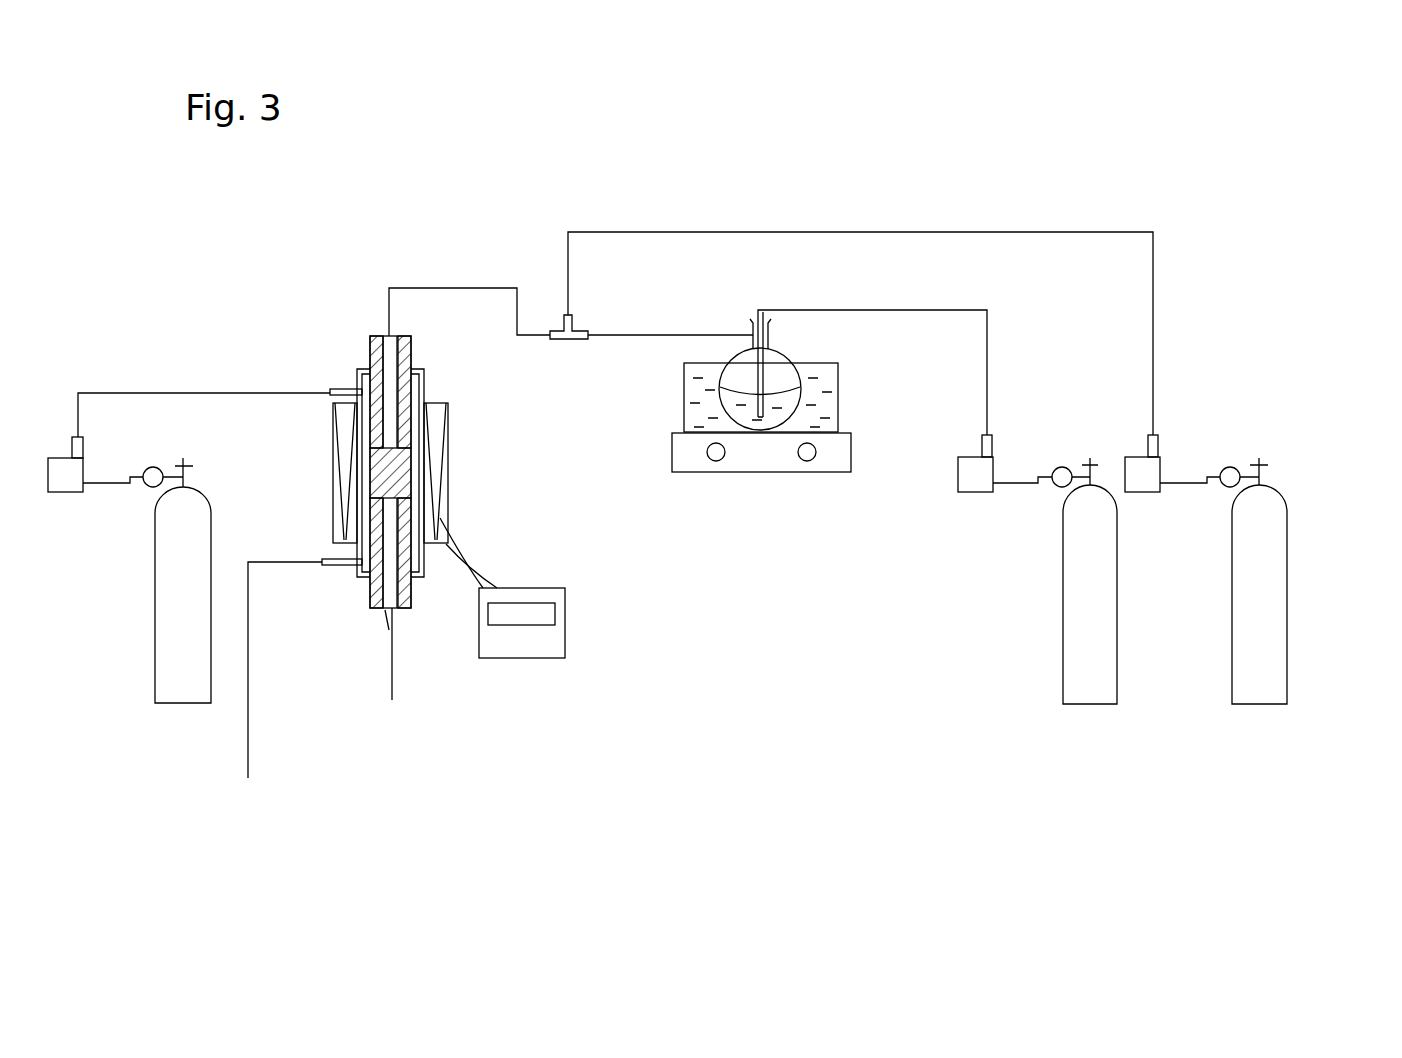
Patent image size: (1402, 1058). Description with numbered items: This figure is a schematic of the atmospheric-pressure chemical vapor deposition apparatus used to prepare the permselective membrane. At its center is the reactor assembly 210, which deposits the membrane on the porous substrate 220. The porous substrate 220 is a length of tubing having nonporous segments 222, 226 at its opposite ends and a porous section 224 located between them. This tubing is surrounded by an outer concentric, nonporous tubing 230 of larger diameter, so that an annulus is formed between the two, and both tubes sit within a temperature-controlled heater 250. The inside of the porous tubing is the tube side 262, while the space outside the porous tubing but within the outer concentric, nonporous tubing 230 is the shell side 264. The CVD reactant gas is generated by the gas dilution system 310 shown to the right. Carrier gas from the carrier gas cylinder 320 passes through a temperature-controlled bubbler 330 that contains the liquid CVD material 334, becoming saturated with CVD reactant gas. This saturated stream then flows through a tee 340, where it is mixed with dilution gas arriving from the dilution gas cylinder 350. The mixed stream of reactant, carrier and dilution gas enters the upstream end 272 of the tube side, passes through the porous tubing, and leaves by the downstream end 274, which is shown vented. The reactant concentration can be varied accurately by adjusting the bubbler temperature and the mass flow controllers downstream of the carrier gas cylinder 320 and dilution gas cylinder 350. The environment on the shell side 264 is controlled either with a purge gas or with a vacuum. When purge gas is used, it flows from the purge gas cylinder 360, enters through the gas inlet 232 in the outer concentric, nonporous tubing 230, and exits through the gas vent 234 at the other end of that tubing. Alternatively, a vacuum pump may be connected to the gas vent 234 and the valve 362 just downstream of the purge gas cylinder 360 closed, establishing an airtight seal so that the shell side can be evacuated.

The reactor assembly 210 is at (296, 302).
The porous substrate 220 is at (362, 503).
The nonporous segment 222 is at (370, 340).
The porous section 224 is at (413, 463).
The nonporous segment 226 is at (371, 590).
The outer concentric, nonporous tubing 230 is at (425, 385).
The gas inlet 232 is at (332, 388).
The gas vent 234 is at (248, 716).
The temperature-controlled heater 250 is at (452, 492).
The tube side 262 is at (392, 352).
The shell side 264 is at (413, 430).
The upstream end 272 is at (388, 334).
The downstream end 274 is at (387, 614).
The gas dilution system 310 is at (821, 176).
The carrier gas cylinder 320 is at (1063, 615).
The temperature-controlled bubbler 330 is at (788, 354).
The liquid CVD material 334 is at (745, 410).
The tee 340 is at (571, 340).
The dilution gas cylinder 350 is at (1288, 612).
The purge gas cylinder 360 is at (156, 608).
The valve 362 is at (185, 460).